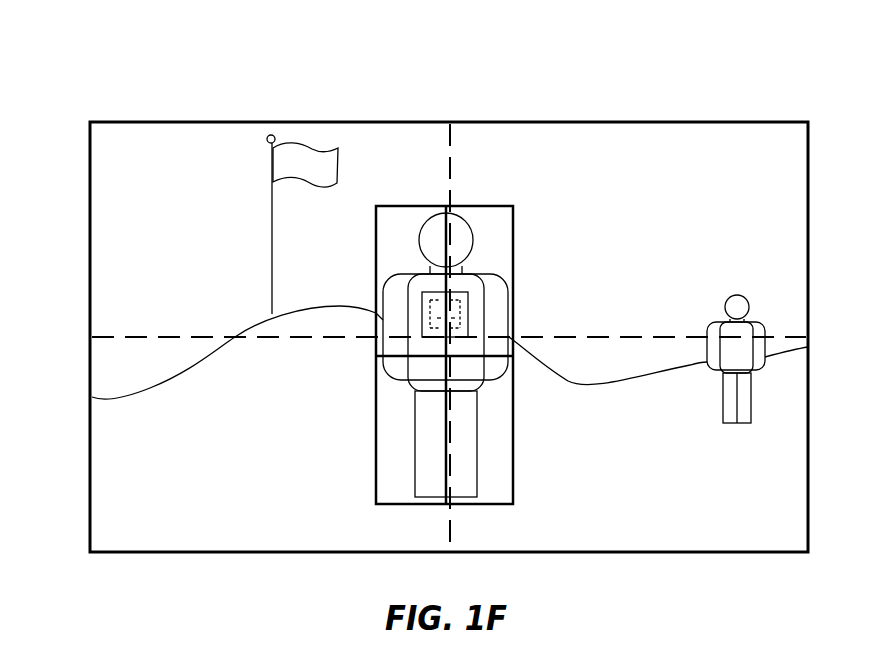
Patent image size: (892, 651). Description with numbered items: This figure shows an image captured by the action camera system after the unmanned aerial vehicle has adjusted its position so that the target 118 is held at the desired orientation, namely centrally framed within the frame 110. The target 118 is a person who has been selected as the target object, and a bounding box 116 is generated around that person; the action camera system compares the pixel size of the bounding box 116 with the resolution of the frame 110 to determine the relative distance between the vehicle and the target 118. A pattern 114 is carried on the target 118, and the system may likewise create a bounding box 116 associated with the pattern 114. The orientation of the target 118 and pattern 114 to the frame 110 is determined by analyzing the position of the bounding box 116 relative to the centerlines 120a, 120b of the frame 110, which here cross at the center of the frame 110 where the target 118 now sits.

The frame 110 is at (106, 89).
The pattern 114 is at (468, 316).
The bounding box 116 is at (513, 444).
The target 118 is at (419, 241).
The centerline 120a is at (305, 341).
The centerline 120b is at (451, 146).